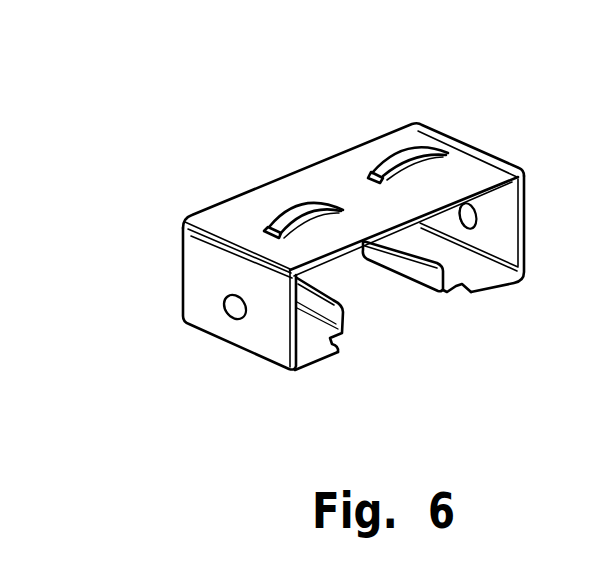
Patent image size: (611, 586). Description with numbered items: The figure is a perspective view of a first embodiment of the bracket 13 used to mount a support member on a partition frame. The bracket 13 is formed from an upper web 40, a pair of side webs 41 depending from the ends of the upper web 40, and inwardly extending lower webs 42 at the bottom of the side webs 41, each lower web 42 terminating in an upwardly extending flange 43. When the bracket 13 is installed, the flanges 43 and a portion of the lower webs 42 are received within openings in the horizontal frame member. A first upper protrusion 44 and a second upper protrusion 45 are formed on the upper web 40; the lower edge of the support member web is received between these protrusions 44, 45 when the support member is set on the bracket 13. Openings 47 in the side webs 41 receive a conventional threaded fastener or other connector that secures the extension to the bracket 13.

The bracket 13 is at (333, 227).
The upper web 40 is at (332, 170).
The side webs 41 is at (200, 283).
The lower webs 42 is at (320, 360).
The flanges 43 is at (372, 308).
The first upper protrusion 44 is at (292, 210).
The second upper protrusion 45 is at (412, 148).
The openings 47 is at (243, 318).